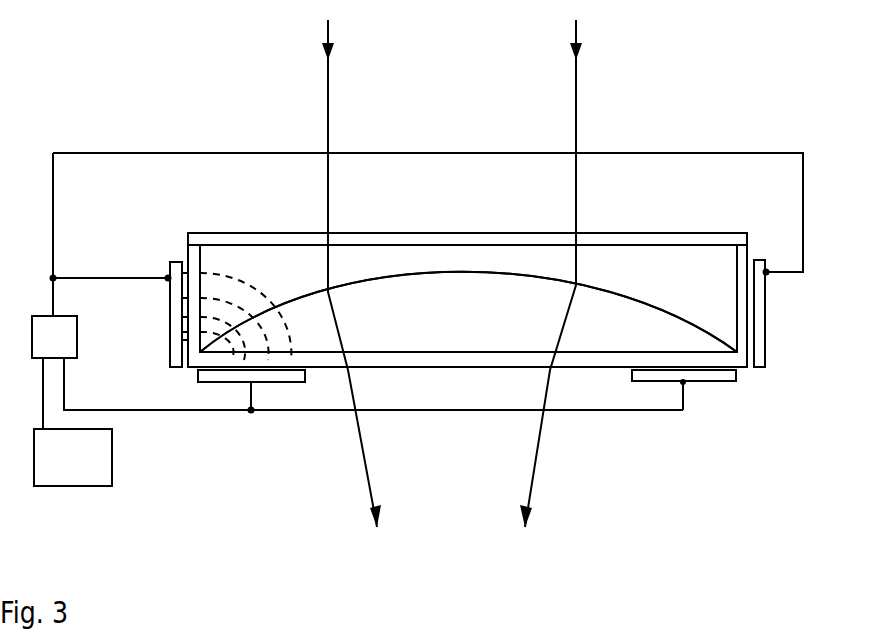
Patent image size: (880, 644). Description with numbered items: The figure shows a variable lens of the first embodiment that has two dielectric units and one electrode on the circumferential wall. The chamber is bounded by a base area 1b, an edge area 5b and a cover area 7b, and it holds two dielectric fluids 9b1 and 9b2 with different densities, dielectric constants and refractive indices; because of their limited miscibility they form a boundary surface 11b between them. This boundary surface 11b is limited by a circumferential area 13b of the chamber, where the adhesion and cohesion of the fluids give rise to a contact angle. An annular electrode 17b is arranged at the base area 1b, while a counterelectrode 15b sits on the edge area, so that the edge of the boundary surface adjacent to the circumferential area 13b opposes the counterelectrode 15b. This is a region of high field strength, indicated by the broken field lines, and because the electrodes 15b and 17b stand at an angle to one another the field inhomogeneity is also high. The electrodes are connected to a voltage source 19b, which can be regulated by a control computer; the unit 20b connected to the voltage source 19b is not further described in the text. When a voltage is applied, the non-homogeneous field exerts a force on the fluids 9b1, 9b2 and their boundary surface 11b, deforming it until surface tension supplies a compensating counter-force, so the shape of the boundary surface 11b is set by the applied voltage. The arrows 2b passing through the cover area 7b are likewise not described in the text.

The base area 1b is at (388, 392).
The incident light beams 2b is at (577, 93).
The edge area 5b is at (190, 256).
The cover area 7b is at (221, 234).
The first dielectric fluid 9b1 is at (712, 291).
The second dielectric fluid 9b2 is at (446, 330).
The boundary surface 11b is at (618, 297).
The circumferential area 13b is at (745, 352).
The counterelectrode 15b is at (175, 292).
The annular electrode 17b is at (216, 377).
The voltage source 19b is at (68, 351).
The control unit 20b is at (92, 474).